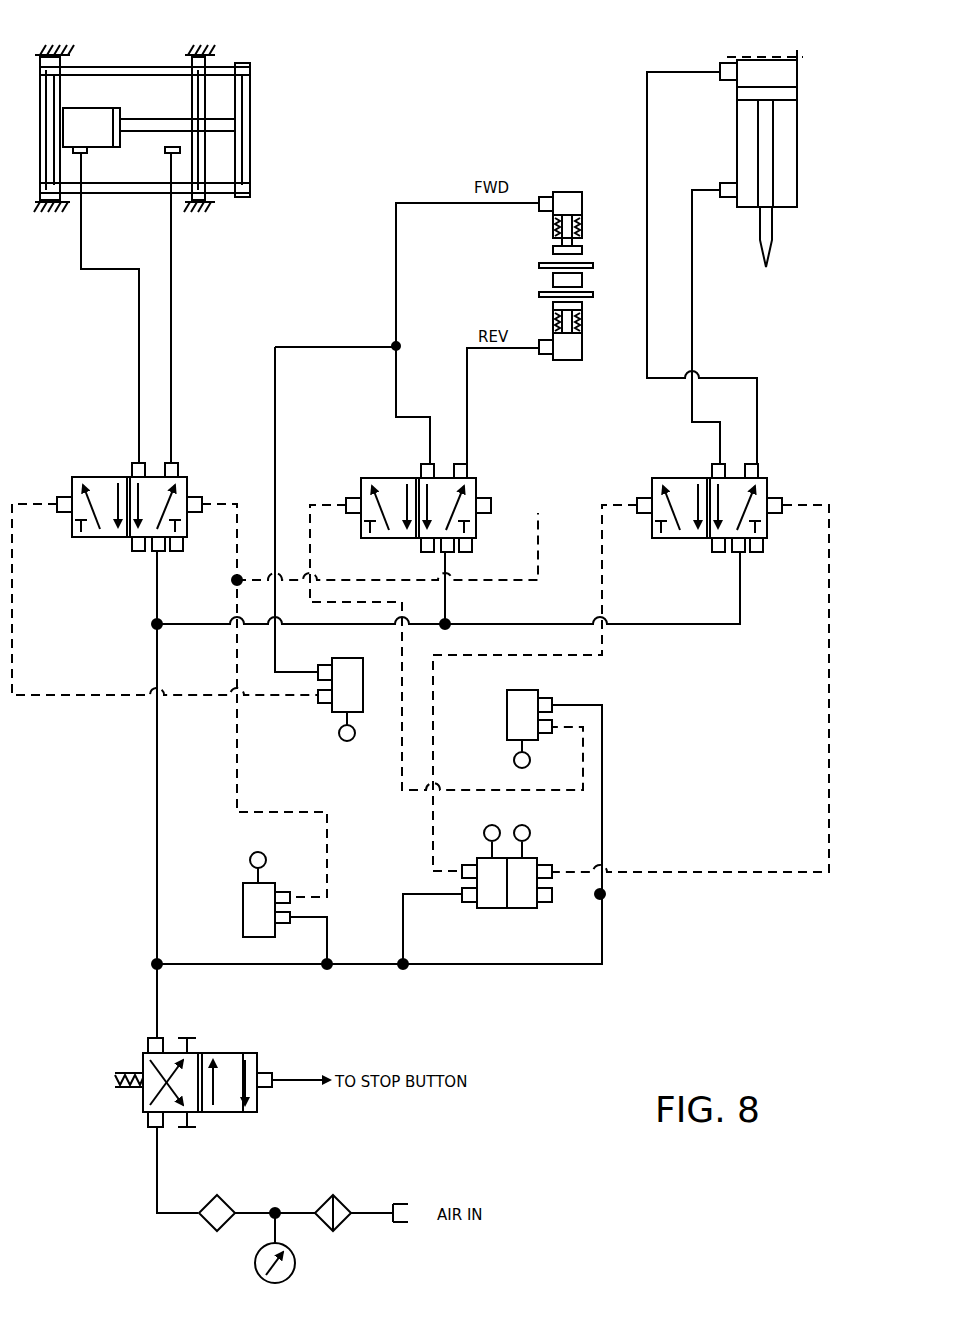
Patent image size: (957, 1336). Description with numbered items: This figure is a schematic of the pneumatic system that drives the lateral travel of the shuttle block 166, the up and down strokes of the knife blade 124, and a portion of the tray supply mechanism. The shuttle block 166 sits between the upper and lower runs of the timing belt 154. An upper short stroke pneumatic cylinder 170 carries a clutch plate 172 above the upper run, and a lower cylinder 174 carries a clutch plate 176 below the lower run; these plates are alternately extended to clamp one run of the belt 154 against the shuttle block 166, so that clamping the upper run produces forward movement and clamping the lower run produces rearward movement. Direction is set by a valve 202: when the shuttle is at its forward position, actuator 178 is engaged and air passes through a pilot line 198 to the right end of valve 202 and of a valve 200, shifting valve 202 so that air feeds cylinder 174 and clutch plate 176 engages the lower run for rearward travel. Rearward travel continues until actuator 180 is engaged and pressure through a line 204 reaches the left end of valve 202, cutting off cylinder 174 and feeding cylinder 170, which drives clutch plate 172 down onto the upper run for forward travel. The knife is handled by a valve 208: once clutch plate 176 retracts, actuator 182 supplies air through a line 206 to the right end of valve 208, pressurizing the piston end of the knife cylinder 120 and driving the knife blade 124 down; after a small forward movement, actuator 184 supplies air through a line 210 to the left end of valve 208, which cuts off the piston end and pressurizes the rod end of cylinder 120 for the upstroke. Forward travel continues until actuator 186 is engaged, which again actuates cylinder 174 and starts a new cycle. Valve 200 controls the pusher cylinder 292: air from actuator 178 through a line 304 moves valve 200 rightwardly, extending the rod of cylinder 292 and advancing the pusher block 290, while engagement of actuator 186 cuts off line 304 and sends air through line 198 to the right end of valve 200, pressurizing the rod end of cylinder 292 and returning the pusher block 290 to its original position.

The knife cylinder 120 is at (722, 108).
The knife blade 124 is at (775, 235).
The timing belt 154 is at (595, 266).
The shuttle block 166 is at (553, 281).
The upper short stroke pneumatic cylinder 170 is at (582, 206).
The clutch plate 172 is at (583, 251).
The lower cylinder 174 is at (568, 360).
The clutch plate 176 is at (583, 305).
The pneumatic actuator 178 is at (315, 710).
The pneumatic actuator 180 is at (553, 688).
The pneumatic actuator 182 is at (566, 832).
The pneumatic actuator 184 is at (480, 852).
The pneumatic actuator 186 is at (240, 900).
The pilot line 198 is at (282, 812).
The valve 200 is at (93, 545).
The valve 202 is at (497, 471).
The line 204 is at (448, 790).
The line 206 is at (737, 872).
The valve 208 is at (777, 474).
The line 210 is at (433, 768).
The pusher block 290 is at (250, 170).
The pusher cylinder 292 is at (107, 108).
The line 304 is at (75, 695).